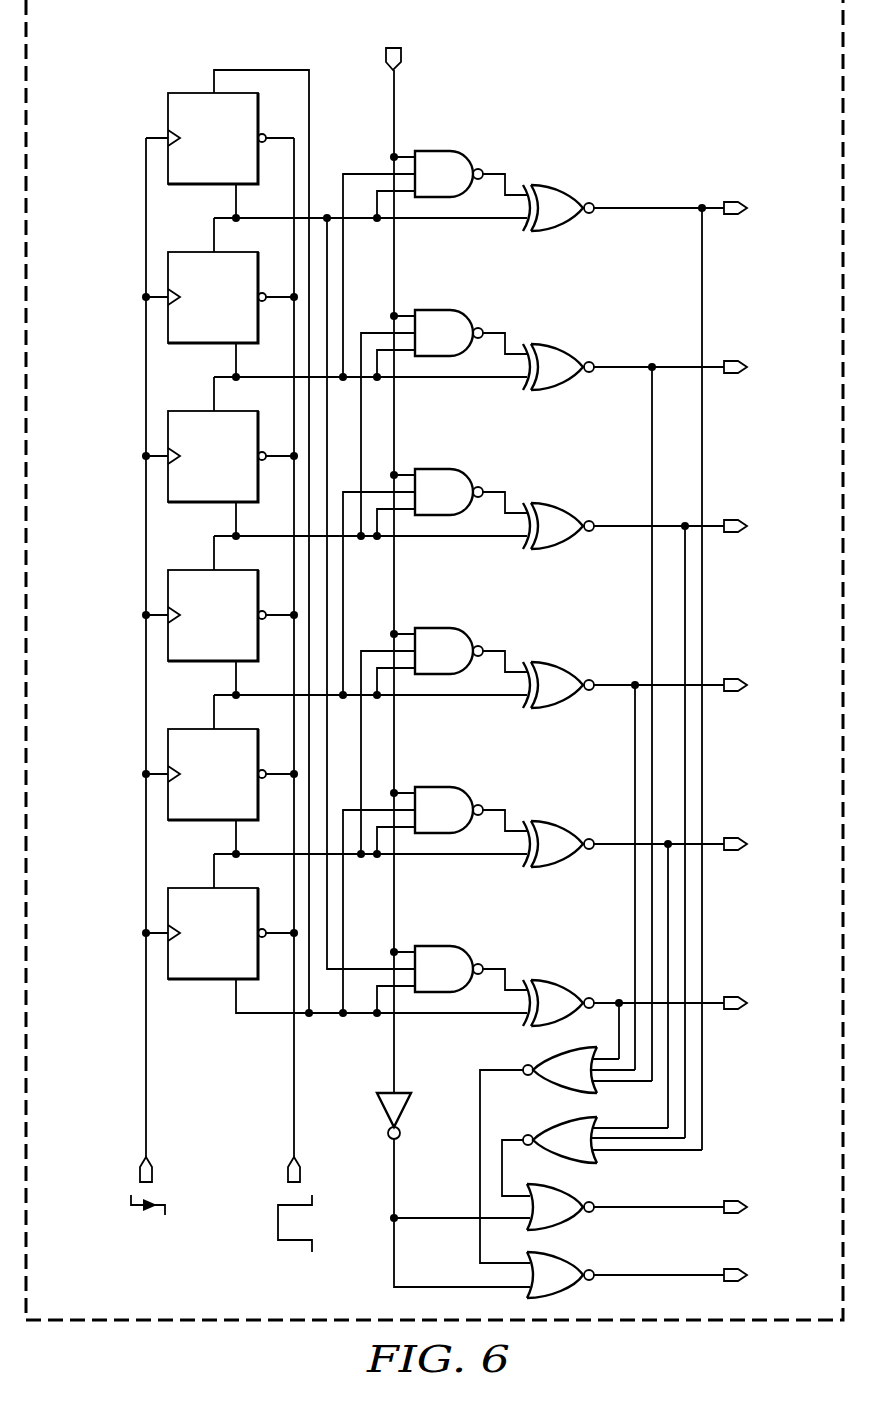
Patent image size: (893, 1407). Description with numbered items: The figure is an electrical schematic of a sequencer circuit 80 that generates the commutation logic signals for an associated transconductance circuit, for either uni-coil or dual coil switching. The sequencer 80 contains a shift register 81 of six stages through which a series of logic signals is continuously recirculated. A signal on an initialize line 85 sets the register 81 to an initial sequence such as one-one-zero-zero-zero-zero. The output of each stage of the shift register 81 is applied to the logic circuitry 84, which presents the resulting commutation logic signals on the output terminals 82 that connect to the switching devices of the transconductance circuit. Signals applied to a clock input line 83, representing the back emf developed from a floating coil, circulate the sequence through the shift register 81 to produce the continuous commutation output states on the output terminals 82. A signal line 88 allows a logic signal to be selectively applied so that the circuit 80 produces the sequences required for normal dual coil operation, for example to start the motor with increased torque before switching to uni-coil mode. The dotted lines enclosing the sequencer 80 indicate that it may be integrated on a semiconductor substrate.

The sequencer circuit 80 is at (790, 138).
The shift register 81 is at (188, 66).
The output terminals 82 is at (733, 178).
The clock input line 83 is at (146, 1012).
The logic circuitry 84 is at (516, 152).
The initialize line 85 is at (293, 1052).
The signal line 88 is at (393, 95).